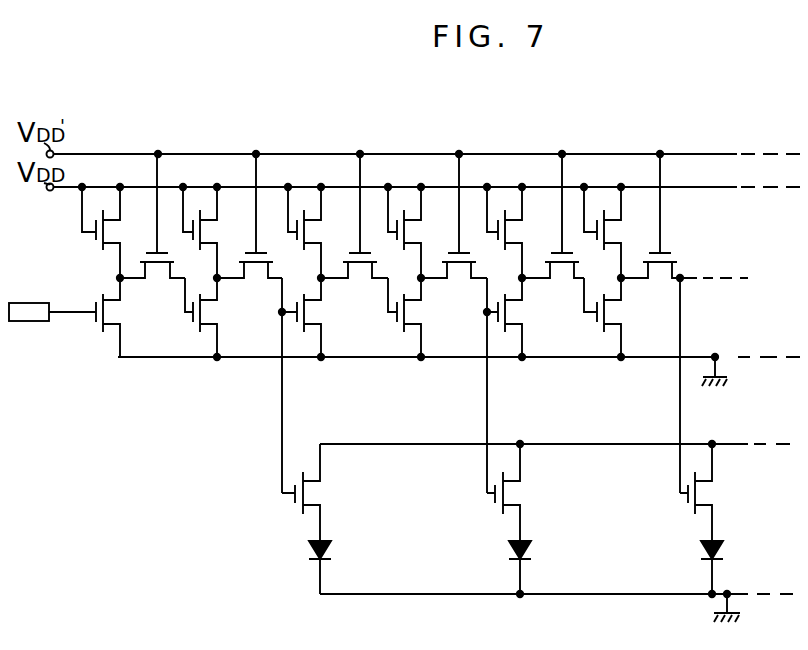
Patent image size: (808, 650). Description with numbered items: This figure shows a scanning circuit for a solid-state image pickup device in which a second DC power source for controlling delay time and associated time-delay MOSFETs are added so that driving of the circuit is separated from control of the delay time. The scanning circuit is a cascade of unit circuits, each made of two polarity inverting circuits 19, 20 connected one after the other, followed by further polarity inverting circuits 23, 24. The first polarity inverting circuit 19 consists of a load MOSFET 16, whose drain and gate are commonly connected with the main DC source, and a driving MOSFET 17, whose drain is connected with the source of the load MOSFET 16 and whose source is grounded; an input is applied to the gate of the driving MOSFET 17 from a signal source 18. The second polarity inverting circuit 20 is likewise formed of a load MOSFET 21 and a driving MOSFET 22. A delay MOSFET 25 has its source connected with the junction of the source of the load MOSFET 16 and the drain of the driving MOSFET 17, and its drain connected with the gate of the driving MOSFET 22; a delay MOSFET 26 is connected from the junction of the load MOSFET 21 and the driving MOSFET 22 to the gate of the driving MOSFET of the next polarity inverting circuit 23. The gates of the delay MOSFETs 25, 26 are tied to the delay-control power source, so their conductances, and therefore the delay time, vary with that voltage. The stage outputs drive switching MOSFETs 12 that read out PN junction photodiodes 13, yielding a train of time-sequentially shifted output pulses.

The switching MOSFET 12 is at (310, 490).
The PN junction photodiode 13 is at (331, 554).
The load MOSFET 16 is at (106, 231).
The driving MOSFET 17 is at (96, 300).
The input signal source 18 is at (28, 303).
The polarity inverting circuit 19 is at (127, 281).
The polarity inverting circuit 20 is at (227, 281).
The load MOSFET 21 is at (203, 231).
The driving MOSFET 22 is at (195, 317).
The polarity inverting circuit 23 is at (377, 366).
The fourth inverter stage 24 is at (477, 366).
The MOSFET for causing time delay 25 is at (156, 265).
The MOSFET for causing time delay 26 is at (255, 265).